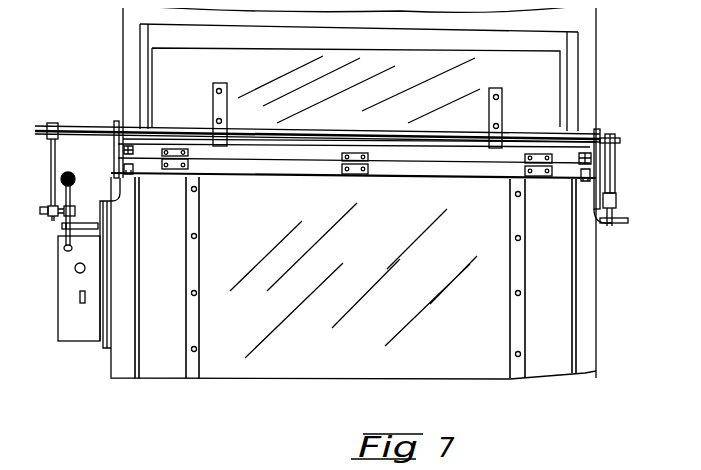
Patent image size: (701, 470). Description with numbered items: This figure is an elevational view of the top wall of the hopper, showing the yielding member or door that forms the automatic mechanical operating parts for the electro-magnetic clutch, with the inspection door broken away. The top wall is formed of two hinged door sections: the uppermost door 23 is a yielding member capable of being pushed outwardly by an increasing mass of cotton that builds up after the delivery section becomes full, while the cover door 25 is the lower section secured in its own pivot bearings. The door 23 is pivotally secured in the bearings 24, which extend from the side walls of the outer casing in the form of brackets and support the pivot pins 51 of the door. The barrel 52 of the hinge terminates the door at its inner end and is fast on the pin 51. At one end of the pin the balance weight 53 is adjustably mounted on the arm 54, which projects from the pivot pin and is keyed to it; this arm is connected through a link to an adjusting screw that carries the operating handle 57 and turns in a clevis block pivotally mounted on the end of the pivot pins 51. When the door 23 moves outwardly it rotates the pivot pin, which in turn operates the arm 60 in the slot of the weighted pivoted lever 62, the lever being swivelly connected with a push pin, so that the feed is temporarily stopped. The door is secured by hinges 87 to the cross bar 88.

The door 23 is at (555, 78).
The bearings 24 is at (117, 142).
The cover door 25 is at (553, 309).
The pivot pins 51 is at (189, 130).
The barrel 52 is at (225, 138).
The balance weight 53 is at (617, 198).
The arm 54 is at (614, 171).
The operating handle 57 is at (619, 221).
The arm 60 is at (52, 170).
The weighted pivoted lever 62 is at (71, 197).
The hinges 87 is at (183, 166).
The cross bar 88 is at (564, 160).